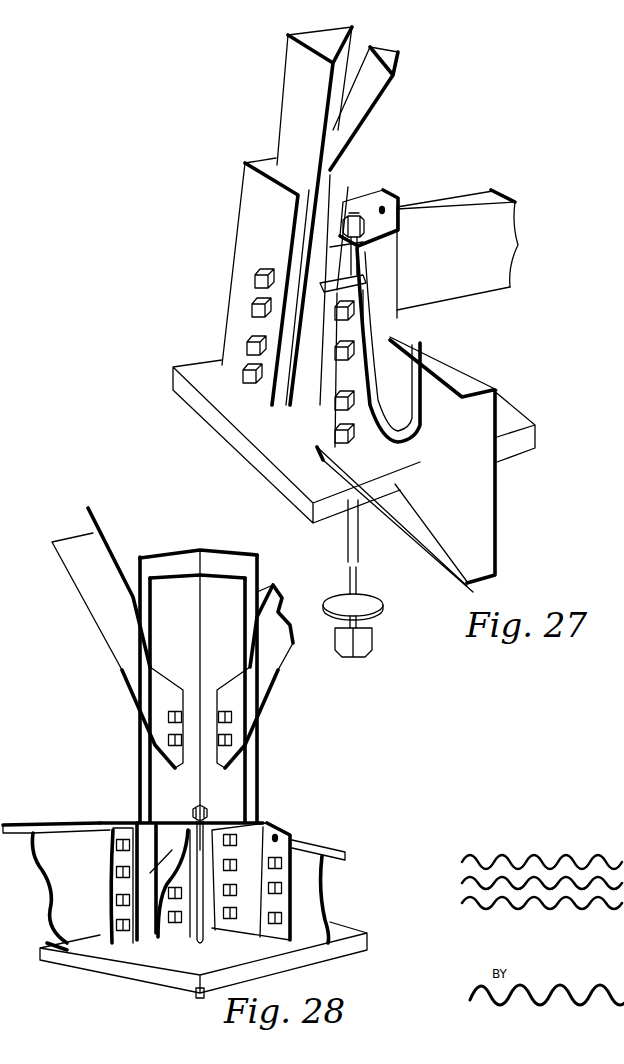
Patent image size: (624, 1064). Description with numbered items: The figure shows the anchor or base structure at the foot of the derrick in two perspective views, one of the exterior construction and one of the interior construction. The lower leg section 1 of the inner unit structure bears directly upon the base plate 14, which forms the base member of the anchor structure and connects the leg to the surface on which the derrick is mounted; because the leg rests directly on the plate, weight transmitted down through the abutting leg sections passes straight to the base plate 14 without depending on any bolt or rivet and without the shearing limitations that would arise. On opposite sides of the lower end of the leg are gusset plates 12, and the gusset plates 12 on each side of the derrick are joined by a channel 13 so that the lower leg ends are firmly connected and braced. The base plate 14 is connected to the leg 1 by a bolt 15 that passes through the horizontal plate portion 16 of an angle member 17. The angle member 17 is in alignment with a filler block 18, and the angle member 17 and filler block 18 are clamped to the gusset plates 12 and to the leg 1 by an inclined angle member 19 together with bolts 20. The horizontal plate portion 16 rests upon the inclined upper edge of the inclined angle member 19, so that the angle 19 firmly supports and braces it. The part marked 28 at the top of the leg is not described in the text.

In FIG. 27, the lower leg section 1 is at (307, 90).
In FIG. 28, the lower leg section 1 is at (217, 617).
In FIG. 27, the gusset plate 12 is at (348, 187).
In FIG. 28, the gusset plate 12 is at (130, 823).
In FIG. 27, the channel 13 is at (448, 208).
In FIG. 28, the channel 13 is at (57, 843).
In FIG. 27, the base plate 14 is at (237, 405).
In FIG. 27, the bolt 15 is at (340, 227).
In FIG. 28, the bolt 15 is at (237, 813).
In FIG. 27, the horizontal plate portion 16 is at (377, 192).
In FIG. 28, the horizontal plate portion 16 is at (170, 812).
In FIG. 28, the angle member 17 is at (140, 822).
In FIG. 28, the filler block 18 is at (163, 940).
In FIG. 27, the inclined angle member 19 is at (372, 318).
In FIG. 28, the inclined angle member 19 is at (110, 940).
In FIG. 28, the bolt 20 is at (110, 843).
In FIG. 27, the cap plate 28 is at (275, 195).
In FIG. 28, the cap plate 28 is at (222, 563).